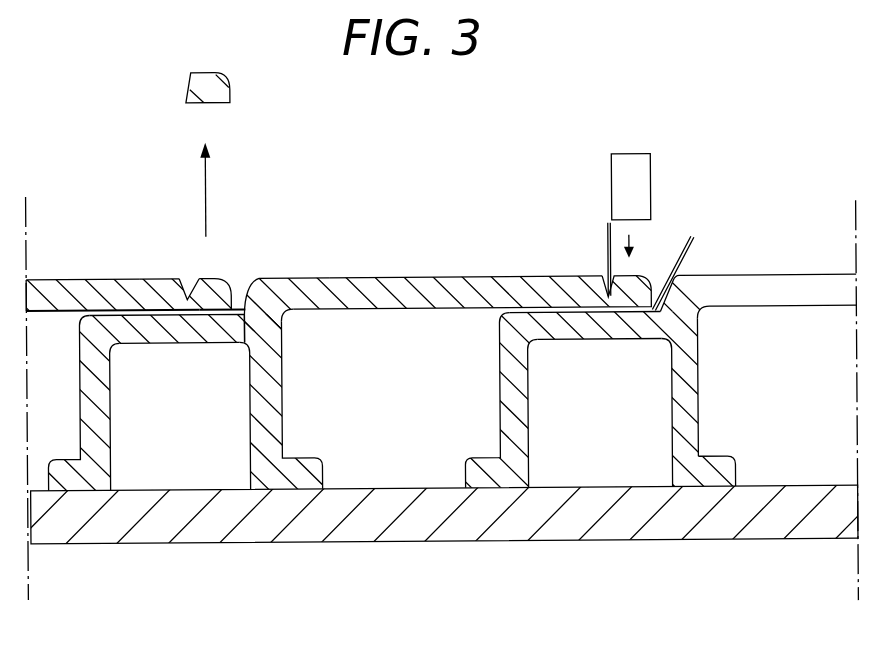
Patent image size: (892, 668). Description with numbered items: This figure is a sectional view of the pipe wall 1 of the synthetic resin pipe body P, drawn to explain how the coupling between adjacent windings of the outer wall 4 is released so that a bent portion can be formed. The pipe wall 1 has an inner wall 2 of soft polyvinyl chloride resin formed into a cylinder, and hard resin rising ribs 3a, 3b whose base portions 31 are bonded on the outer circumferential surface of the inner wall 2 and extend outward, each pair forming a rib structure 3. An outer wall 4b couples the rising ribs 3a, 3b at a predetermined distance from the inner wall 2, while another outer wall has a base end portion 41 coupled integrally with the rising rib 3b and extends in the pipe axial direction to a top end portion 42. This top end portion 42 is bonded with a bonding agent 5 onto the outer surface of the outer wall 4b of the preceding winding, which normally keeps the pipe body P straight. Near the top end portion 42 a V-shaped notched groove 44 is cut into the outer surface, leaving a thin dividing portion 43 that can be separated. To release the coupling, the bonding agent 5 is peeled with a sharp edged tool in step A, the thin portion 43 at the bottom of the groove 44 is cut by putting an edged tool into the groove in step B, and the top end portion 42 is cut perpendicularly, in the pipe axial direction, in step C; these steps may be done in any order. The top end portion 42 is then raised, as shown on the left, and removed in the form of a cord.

The pipe wall 1 is at (463, 273).
The inner wall 2 is at (365, 528).
The rising rib 3 is at (445, 458).
The rising rib 3a is at (112, 413).
The rising rib 3b is at (284, 404).
The base portion 31 is at (715, 531).
The outer wall 4 is at (445, 356).
The outer wall 4b is at (445, 356).
The base end portion 41 is at (290, 290).
The top end portion 42 is at (214, 79).
The dividing portion 43 is at (157, 290).
The notched groove 44 is at (188, 274).
The bonding agent 5 is at (224, 318).
The peeling step A is at (690, 246).
The cutting step of the thin portion B is at (606, 248).
The cutting step of the top end portion C is at (633, 160).
The pipe body P is at (770, 261).